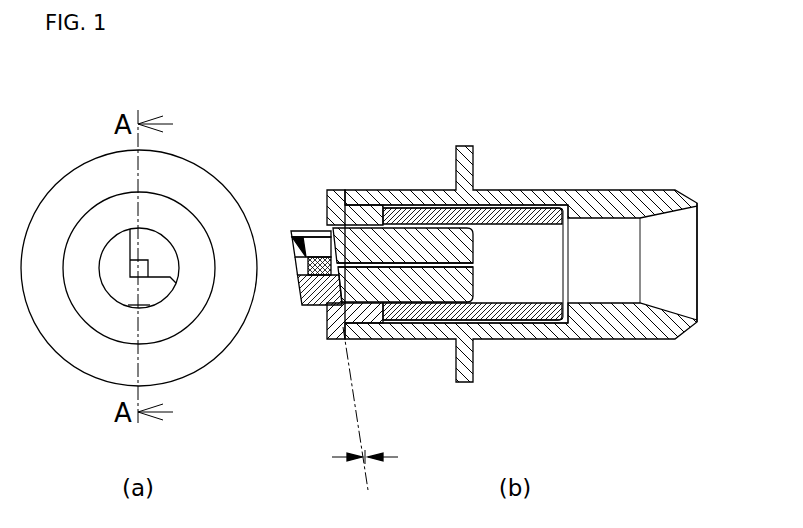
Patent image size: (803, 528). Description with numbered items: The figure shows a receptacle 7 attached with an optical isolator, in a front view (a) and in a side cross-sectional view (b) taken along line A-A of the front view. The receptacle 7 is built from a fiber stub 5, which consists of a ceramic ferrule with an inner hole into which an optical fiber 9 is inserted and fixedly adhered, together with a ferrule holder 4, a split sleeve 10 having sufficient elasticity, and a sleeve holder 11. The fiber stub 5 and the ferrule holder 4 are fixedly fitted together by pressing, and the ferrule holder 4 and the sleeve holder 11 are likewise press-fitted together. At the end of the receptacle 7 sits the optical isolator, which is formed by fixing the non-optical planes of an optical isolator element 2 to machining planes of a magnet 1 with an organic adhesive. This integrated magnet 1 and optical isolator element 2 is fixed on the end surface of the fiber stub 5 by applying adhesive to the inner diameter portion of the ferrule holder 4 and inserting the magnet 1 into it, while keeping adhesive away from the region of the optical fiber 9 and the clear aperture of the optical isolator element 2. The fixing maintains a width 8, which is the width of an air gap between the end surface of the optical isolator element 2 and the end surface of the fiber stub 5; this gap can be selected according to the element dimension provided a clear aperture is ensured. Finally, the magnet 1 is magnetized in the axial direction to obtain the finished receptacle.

The magnet 1 is at (147, 291).
The optical isolator element 2 is at (148, 257).
The ferrule holder 4 is at (113, 321).
The fiber stub 5 is at (394, 245).
The receptacle 7 is at (555, 190).
The width 8 is at (365, 423).
The optical fiber 9 is at (423, 265).
The split sleeve 10 is at (515, 313).
The sleeve holder 11 is at (630, 320).